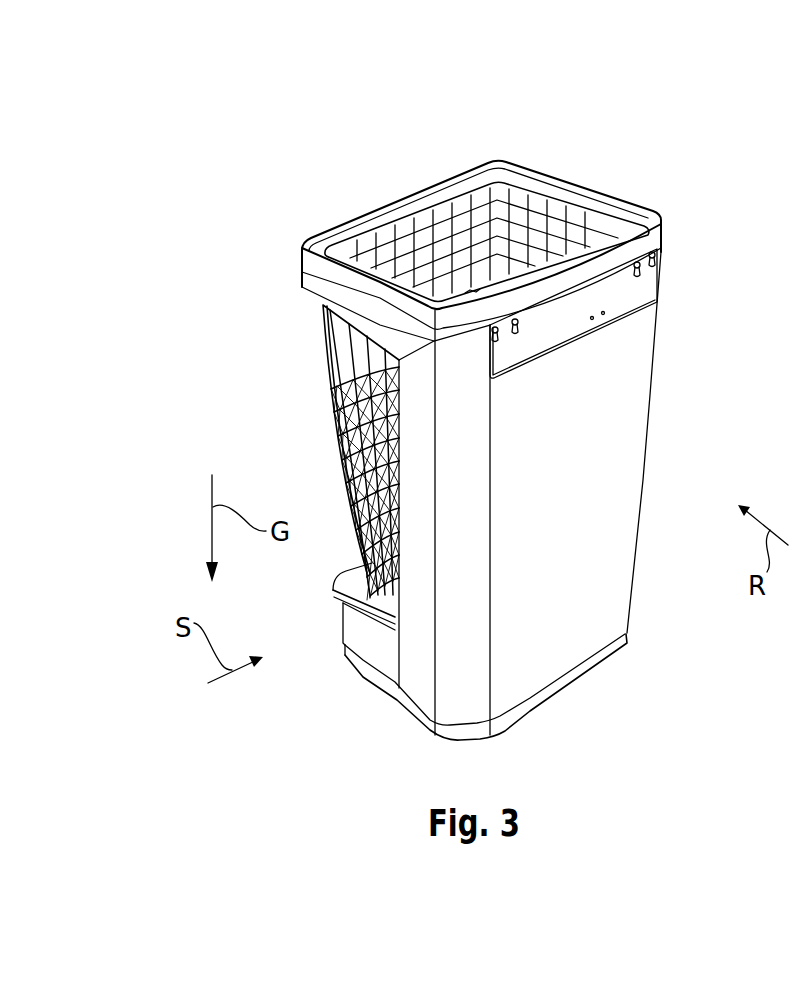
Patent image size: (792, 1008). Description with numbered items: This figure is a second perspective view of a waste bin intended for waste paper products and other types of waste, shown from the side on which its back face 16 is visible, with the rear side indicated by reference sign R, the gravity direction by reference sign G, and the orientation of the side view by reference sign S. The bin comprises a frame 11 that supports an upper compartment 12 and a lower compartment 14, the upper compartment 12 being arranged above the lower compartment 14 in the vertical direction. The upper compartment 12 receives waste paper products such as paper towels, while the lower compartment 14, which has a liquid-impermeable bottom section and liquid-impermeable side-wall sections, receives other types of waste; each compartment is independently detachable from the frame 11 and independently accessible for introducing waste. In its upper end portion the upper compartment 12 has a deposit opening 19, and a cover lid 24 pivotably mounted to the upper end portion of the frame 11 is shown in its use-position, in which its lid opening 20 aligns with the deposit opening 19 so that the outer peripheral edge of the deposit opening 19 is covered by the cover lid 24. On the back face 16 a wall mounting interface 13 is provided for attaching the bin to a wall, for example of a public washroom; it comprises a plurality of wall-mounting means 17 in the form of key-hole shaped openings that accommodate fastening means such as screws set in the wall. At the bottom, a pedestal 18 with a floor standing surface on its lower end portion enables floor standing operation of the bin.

The frame 11 is at (513, 660).
The upper compartment 12 is at (333, 416).
The wall mounting interface 13 is at (583, 295).
The lower compartment 14 is at (353, 622).
The back face 16 is at (604, 457).
The wall-mounting means 17 is at (660, 262).
The pedestal 18 is at (620, 645).
The deposit opening 19 is at (481, 182).
The lid opening 20 is at (486, 229).
The cover lid 24 is at (576, 185).